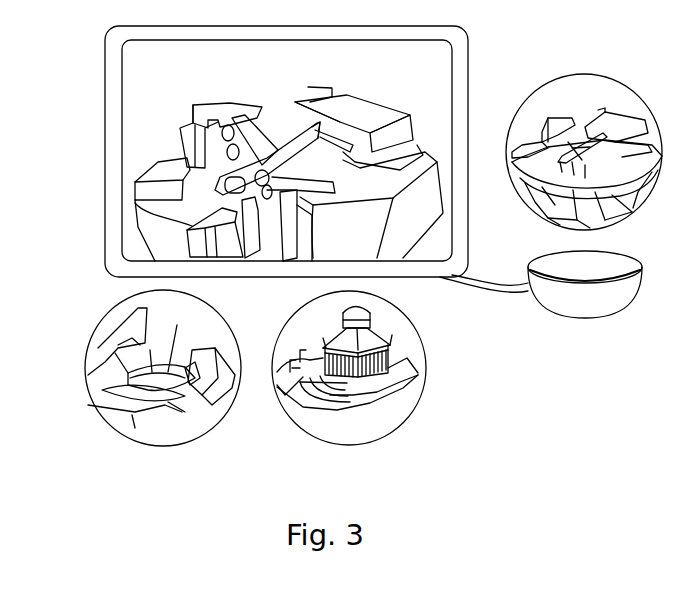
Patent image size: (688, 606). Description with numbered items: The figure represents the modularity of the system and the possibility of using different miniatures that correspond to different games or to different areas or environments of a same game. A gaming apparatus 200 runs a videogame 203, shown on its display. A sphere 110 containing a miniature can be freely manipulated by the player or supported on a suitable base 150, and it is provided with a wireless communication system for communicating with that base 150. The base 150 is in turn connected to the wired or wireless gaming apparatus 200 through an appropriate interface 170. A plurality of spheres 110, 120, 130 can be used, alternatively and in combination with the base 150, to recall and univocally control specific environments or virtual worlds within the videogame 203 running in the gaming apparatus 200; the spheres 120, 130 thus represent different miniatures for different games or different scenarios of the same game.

The gaming apparatus 200 is at (446, 24).
The videogame 203 is at (203, 90).
The sphere 110 is at (584, 73).
The sphere 120 is at (83, 362).
The sphere 130 is at (428, 363).
The base 150 is at (590, 327).
The interface 170 is at (487, 293).